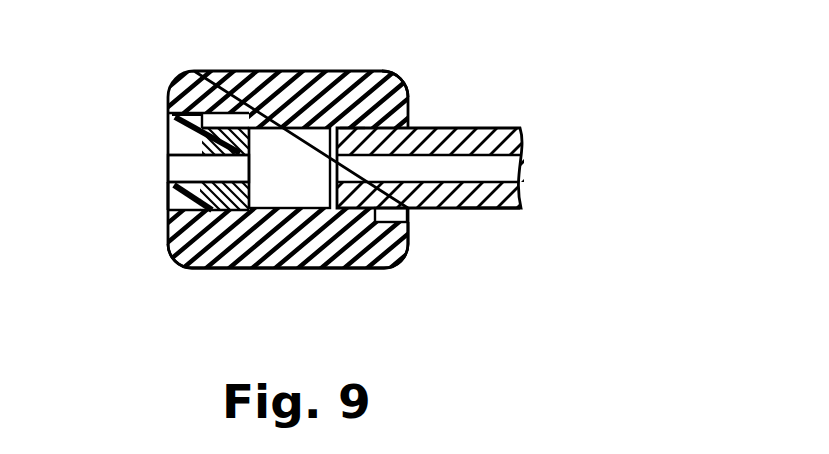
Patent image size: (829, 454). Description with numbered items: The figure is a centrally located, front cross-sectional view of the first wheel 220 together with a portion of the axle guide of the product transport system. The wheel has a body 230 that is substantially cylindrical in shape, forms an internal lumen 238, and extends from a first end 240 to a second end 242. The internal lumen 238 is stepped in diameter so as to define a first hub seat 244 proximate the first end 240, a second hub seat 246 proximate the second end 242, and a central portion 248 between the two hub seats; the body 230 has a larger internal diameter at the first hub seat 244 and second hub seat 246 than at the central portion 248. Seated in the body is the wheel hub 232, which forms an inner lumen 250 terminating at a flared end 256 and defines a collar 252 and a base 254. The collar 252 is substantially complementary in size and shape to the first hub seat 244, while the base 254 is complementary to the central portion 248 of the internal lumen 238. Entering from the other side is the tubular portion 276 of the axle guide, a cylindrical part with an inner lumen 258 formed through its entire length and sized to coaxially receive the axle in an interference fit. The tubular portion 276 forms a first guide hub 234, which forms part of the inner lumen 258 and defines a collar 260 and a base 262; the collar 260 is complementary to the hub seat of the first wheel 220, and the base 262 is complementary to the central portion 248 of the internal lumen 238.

The first wheel 220 is at (426, 61).
The first end 240 is at (168, 103).
The body 230 is at (390, 95).
The base 262 is at (352, 118).
The flared end 256 is at (247, 157).
The wheel hub 232 is at (168, 142).
The inner lumen 250 is at (226, 182).
The collar 252 is at (168, 200).
The internal lumen 238 is at (311, 171).
The first guide hub 234 is at (407, 125).
The inner lumen 258 is at (446, 184).
The tubular portion 276 is at (478, 194).
The collar 260 is at (410, 212).
The second end 242 is at (407, 237).
The second hub seat 246 is at (377, 252).
The central portion 248 is at (282, 257).
The base 254 is at (216, 260).
The first hub seat 244 is at (172, 245).